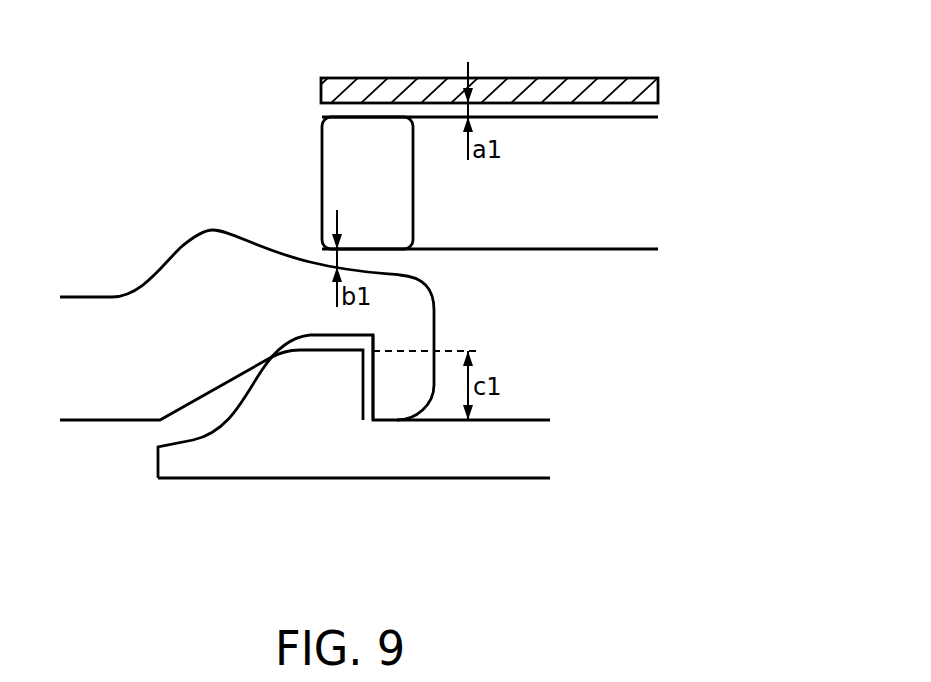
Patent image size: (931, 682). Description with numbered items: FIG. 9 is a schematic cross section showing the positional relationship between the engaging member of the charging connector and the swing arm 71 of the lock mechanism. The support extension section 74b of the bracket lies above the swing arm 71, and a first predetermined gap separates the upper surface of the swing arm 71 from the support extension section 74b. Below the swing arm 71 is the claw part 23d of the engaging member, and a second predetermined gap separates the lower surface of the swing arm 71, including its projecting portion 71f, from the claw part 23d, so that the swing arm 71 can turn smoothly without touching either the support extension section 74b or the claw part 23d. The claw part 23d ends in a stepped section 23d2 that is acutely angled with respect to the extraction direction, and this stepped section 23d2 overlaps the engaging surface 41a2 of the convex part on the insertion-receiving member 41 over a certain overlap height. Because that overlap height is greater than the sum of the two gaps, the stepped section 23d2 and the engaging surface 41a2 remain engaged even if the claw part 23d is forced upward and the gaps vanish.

The support extension section 74b is at (352, 78).
The swing arm 71 is at (590, 226).
The projection of transfer unit 71f is at (335, 145).
The claw part 23d is at (304, 259).
The stepped section 23d2 is at (371, 368).
The insertion-receiving member 41 is at (270, 430).
The engaging surface 41a2 is at (374, 397).